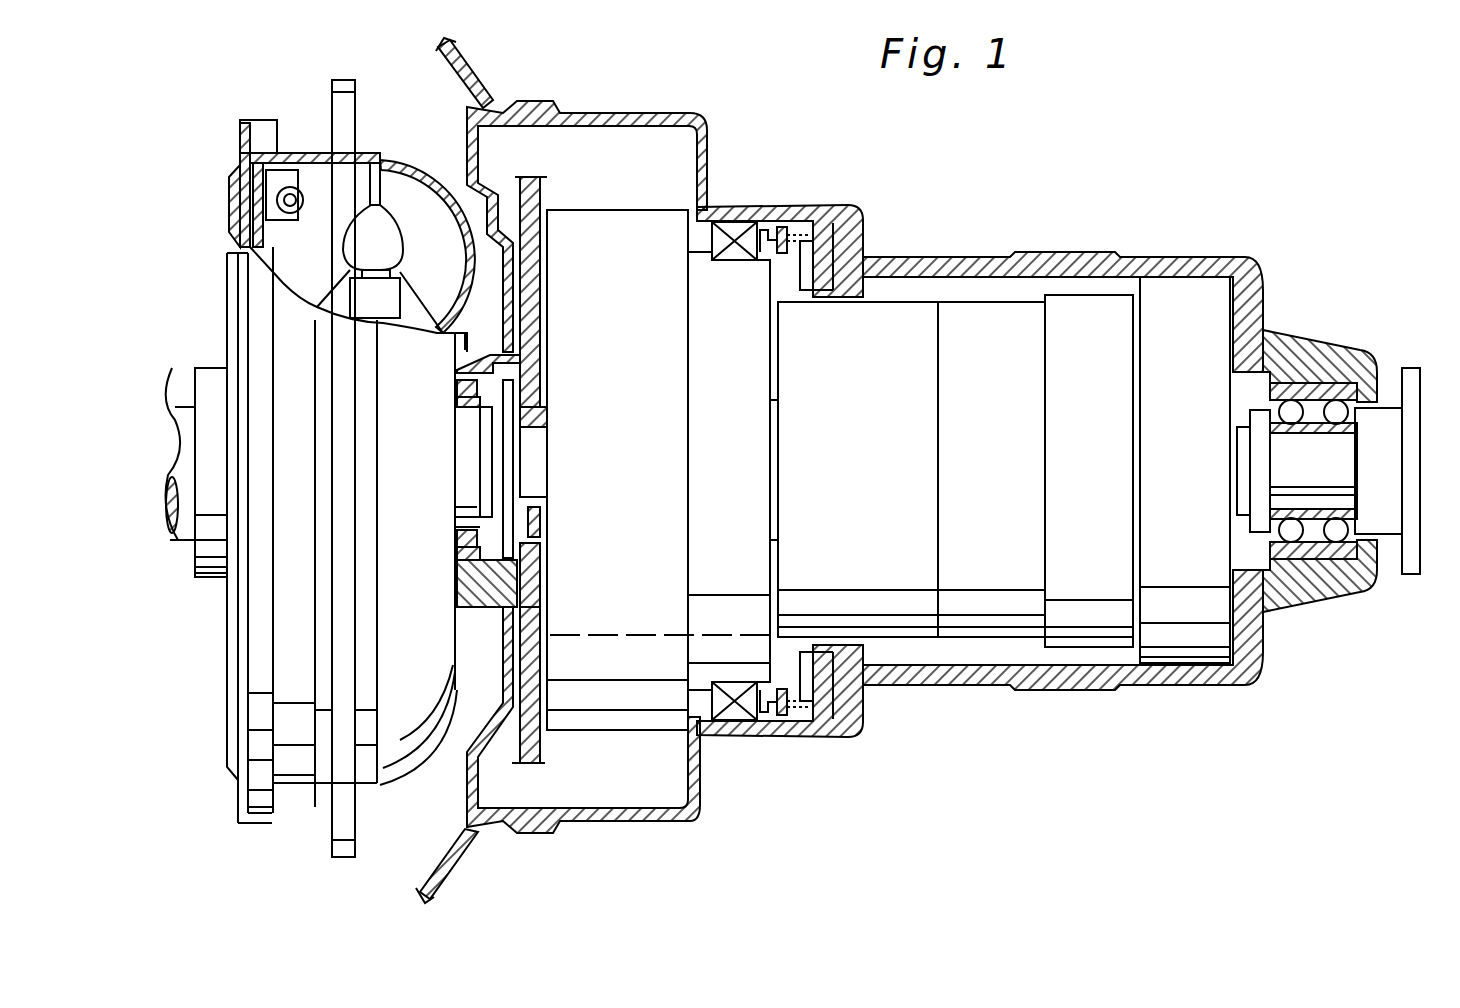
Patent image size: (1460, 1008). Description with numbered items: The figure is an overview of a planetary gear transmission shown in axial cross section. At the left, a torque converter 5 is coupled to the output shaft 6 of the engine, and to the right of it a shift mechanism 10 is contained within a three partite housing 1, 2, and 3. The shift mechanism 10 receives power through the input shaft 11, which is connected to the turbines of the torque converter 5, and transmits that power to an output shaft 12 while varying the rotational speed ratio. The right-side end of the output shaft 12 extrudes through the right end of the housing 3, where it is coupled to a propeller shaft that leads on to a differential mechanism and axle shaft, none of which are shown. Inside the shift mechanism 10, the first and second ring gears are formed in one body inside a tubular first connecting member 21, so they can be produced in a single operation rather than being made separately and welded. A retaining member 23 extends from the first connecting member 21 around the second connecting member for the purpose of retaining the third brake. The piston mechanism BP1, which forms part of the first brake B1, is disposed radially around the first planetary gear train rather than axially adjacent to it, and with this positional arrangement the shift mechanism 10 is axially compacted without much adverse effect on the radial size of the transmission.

The housing 1 is at (450, 39).
The housing 2 is at (752, 208).
The housing 3 is at (1190, 258).
The torque converter 5 is at (390, 131).
The output shaft of the engine 6 is at (178, 405).
The shift mechanism 10 is at (931, 286).
The input shaft 11 is at (533, 472).
The output shaft 12 is at (1383, 463).
The first connecting member 21 is at (881, 486).
The retaining member 23 is at (1012, 486).
The first brake B1 is at (730, 726).
The piston mechanism BP1 is at (797, 715).